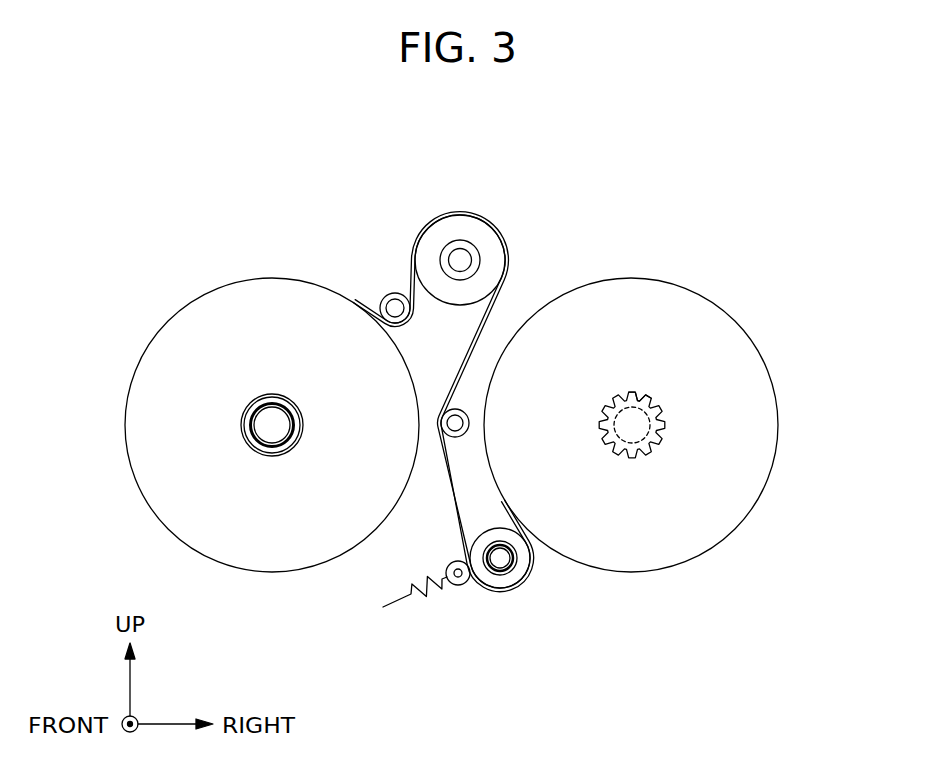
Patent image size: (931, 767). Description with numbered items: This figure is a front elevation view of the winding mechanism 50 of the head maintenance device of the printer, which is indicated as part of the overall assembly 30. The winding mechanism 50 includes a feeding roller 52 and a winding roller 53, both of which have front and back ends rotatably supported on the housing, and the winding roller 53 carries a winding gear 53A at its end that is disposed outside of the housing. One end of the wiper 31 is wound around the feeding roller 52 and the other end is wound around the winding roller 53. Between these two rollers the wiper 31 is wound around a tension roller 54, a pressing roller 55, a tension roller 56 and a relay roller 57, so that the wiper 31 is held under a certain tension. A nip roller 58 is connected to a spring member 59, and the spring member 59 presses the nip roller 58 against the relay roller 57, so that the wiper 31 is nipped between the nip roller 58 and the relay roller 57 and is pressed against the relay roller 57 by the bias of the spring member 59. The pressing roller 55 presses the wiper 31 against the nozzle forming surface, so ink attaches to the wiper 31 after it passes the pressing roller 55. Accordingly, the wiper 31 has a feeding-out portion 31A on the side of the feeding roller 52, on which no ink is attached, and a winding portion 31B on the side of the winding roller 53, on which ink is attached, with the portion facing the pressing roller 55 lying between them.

The ink ribbon cartridge 30 is at (715, 178).
The wiper 31 is at (462, 213).
The feeding-out portion 31A is at (268, 292).
The winding portion 31B is at (656, 292).
The winding mechanism 50 is at (481, 634).
The feeding roller 52 is at (272, 394).
The winding roller 53 is at (649, 428).
The winding gear 53A is at (628, 391).
The tension roller 54 is at (402, 313).
The pressing roller 55 is at (433, 250).
The tension roller 56 is at (457, 436).
The relay roller 57 is at (505, 589).
The nip roller 58 is at (452, 564).
The spring member 59 is at (413, 612).